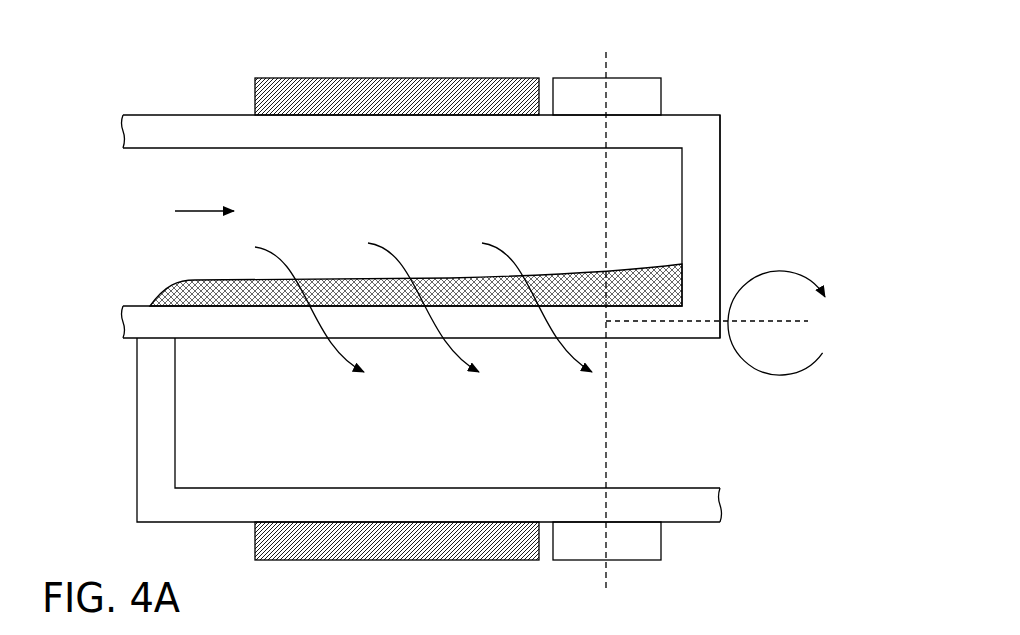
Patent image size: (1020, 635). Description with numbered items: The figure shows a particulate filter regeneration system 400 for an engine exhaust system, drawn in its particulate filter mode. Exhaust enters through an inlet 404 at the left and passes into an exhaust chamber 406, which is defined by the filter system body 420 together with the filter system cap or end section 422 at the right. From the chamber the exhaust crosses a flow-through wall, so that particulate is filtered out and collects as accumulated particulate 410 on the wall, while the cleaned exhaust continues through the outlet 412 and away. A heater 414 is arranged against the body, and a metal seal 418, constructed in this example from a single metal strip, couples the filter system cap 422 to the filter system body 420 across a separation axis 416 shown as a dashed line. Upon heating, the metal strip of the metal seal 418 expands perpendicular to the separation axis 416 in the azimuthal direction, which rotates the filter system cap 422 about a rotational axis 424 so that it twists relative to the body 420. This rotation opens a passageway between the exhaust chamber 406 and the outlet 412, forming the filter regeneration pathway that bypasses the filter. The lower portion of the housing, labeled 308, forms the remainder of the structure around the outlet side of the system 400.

The particulate filter regeneration system 400 is at (144, 68).
The inlet 404 is at (106, 198).
The filter system body 420 is at (203, 113).
The heater 414 is at (468, 78).
The separation axis 416 is at (603, 47).
The metal seal 418 is at (628, 78).
The filter system cap 422 is at (729, 163).
The exhaust chamber 406 is at (543, 213).
The accumulated particulate 410 is at (165, 283).
The outlet 412 is at (568, 421).
The rotational axis 424 is at (758, 320).
The lower housing 308 is at (137, 453).